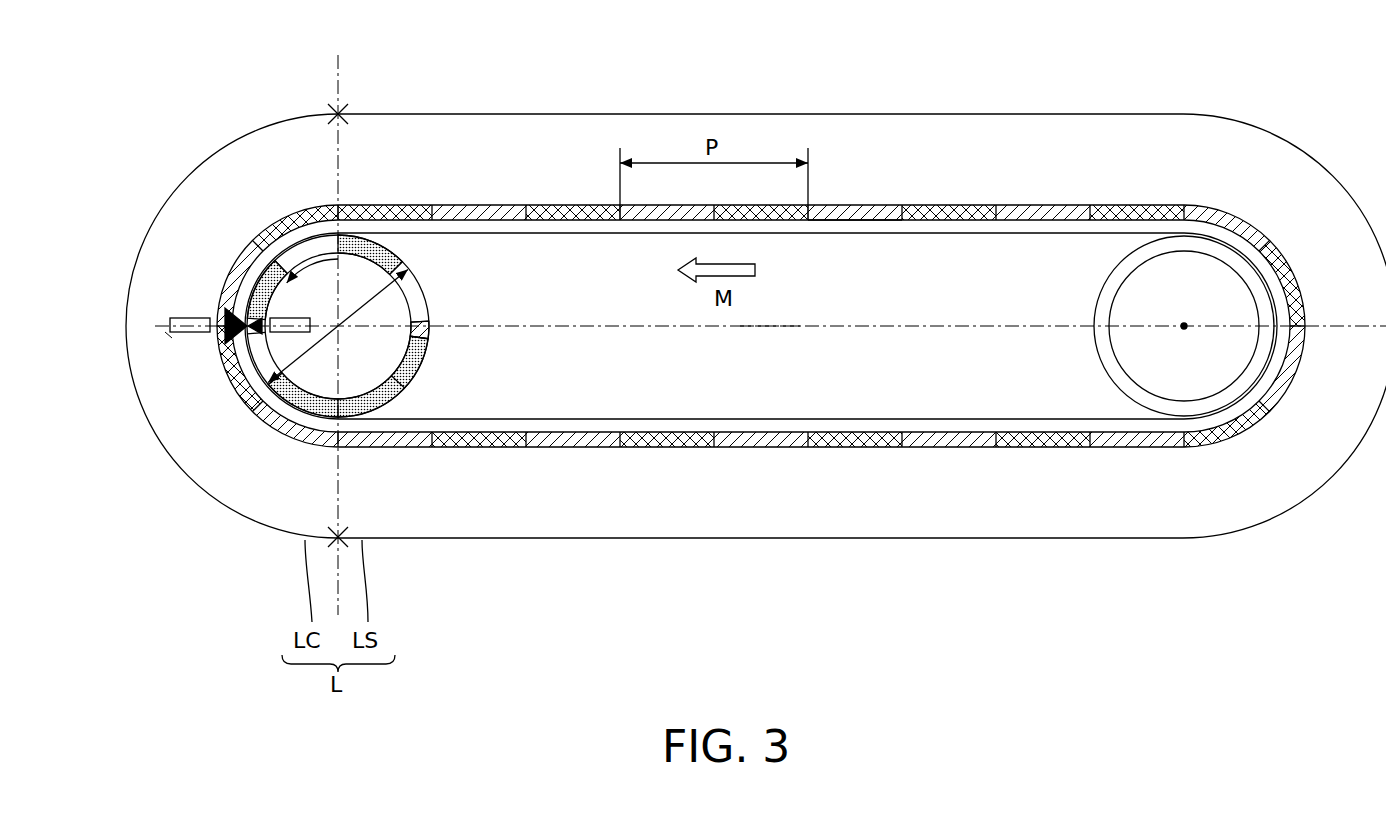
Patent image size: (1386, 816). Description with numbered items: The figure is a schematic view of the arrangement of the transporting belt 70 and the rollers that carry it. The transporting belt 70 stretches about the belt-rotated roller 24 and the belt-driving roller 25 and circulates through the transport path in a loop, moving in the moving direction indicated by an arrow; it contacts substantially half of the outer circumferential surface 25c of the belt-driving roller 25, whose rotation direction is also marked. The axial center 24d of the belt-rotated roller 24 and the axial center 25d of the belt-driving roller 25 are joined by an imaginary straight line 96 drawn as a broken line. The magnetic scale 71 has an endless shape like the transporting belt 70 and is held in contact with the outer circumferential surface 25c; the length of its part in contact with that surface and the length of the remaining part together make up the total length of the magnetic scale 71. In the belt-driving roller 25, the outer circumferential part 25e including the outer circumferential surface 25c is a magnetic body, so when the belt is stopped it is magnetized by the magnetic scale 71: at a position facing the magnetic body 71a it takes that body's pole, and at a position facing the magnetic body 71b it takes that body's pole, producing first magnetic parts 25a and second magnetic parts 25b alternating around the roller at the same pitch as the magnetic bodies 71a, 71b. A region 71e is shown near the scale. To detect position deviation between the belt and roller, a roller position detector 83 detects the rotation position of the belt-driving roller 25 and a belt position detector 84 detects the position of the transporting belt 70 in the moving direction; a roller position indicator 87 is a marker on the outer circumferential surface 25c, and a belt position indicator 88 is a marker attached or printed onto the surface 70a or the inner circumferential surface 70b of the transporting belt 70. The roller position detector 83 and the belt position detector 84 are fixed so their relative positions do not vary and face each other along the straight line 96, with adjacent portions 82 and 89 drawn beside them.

The belt-rotated roller 24 is at (1137, 224).
The axial center of the belt-rotated roller 24d is at (1184, 326).
The belt-driving roller 25 is at (386, 242).
The first magnetic part 25a is at (306, 250).
The second magnetic part 25b is at (238, 312).
The outer circumferential surface 25c is at (432, 314).
The axial center of the belt-driving roller 25d is at (428, 334).
The outer circumferential part 25e is at (438, 358).
The transporting belt 70 is at (761, 225).
The surface of the transporting belt 70a is at (1072, 204).
The inner circumferential surface of the transporting belt 70b is at (760, 418).
The magnetic scale 71 is at (911, 201).
The magnetic body 71a is at (642, 204).
The magnetic body 71b is at (787, 204).
The mark inner surface 71e is at (840, 222).
The belt sensor 82 is at (166, 340).
The roller position detector 83 is at (282, 318).
The belt position detector 84 is at (188, 318).
The roller position indicator 87 is at (250, 338).
The belt position indicator 88 is at (228, 342).
The detection unit 89 is at (192, 325).
The imaginary straight line 96 is at (758, 324).